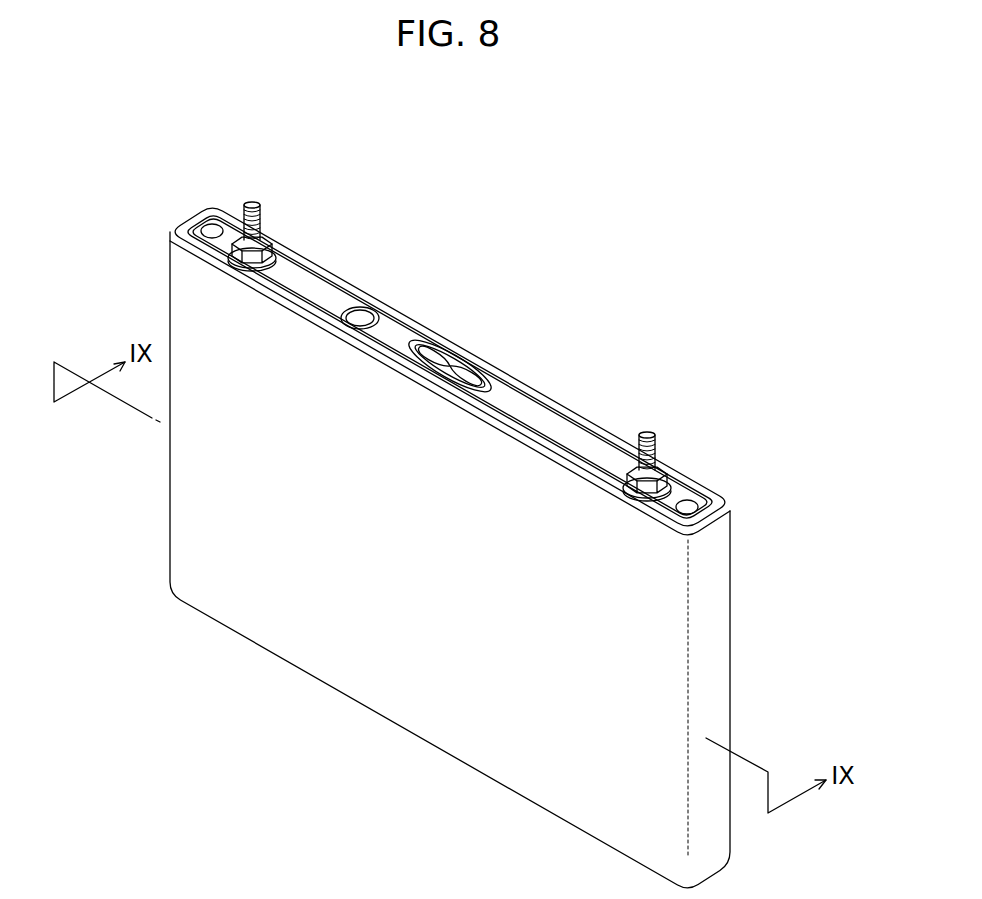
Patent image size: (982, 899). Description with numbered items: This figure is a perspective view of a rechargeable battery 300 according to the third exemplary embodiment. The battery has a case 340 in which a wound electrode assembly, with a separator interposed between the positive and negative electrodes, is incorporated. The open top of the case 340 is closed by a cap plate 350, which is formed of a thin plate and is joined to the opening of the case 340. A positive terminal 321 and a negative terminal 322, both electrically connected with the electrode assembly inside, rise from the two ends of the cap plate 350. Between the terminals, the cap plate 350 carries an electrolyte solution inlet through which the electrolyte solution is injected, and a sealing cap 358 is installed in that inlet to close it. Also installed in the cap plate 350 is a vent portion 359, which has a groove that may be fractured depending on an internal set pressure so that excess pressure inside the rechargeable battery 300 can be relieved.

The rechargeable battery 300 is at (547, 360).
The positive terminal 321 is at (250, 204).
The negative terminal 322 is at (648, 435).
The case 340 is at (400, 700).
The cap plate 350 is at (412, 320).
The sealing cap 358 is at (360, 313).
The vent portion 359 is at (453, 362).